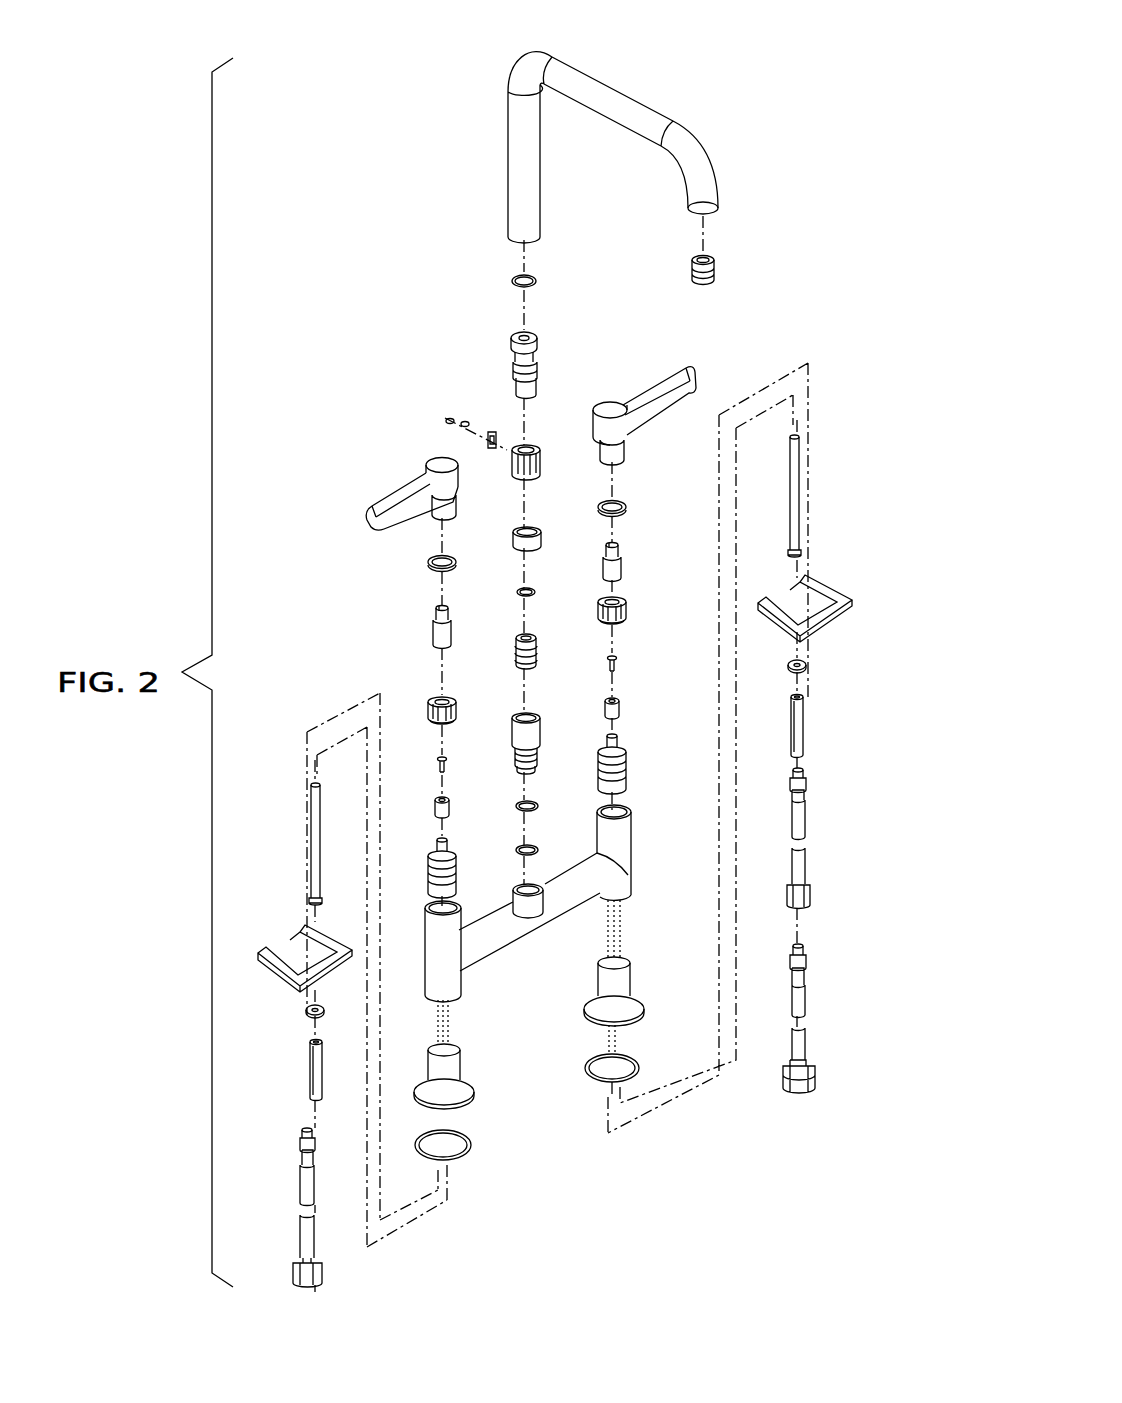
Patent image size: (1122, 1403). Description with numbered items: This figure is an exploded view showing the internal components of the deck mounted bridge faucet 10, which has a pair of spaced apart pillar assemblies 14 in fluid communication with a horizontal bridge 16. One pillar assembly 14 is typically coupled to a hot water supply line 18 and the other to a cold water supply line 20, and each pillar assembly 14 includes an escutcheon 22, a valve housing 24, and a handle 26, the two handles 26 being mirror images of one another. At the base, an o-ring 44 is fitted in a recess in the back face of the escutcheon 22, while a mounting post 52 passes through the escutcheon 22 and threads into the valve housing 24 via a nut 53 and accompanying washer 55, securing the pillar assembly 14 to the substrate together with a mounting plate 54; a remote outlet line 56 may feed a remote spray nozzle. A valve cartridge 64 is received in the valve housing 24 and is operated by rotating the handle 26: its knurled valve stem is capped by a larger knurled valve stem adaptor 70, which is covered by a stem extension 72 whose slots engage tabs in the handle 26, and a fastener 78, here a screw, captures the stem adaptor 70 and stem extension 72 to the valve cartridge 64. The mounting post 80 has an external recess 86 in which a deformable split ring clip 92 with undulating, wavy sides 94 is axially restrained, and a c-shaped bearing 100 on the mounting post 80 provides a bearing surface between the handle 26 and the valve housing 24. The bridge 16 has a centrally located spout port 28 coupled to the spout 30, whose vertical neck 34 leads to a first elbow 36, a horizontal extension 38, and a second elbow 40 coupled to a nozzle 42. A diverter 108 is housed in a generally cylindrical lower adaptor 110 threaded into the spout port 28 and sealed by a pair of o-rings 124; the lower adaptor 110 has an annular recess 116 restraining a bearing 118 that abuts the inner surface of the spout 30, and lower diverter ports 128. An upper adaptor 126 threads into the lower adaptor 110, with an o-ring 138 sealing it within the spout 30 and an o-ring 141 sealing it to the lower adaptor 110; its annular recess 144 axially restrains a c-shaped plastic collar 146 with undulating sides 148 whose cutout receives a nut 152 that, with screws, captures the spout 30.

The deck mounted bridge faucet 10 is at (361, 220).
The pillar assembly 14 is at (466, 1194).
The horizontal bridge 16 is at (534, 905).
The hot water supply line 18 is at (299, 1180).
The cold water supply line 20 is at (821, 820).
The escutcheon 22 is at (469, 1069).
The valve housing 24 is at (420, 944).
The handle 26 is at (517, 449).
The spout port 28 is at (518, 880).
The spout 30 is at (598, 133).
The vertical neck 34 is at (541, 145).
The first elbow 36 is at (510, 72).
The horizontal extension 38 is at (630, 88).
The second elbow 40 is at (707, 150).
The nozzle 42 is at (716, 262).
The o-ring 44 is at (462, 1136).
The mounting post 52 is at (321, 797).
The nut 53 is at (323, 1080).
The mounting plate 54 is at (270, 972).
The washer 55 is at (322, 1007).
The remote outlet line 56 is at (810, 996).
The valve cartridge 64 is at (427, 871).
The valve stem adaptor 70 is at (435, 806).
The stem extension 72 is at (429, 632).
The fastener 78 is at (437, 762).
The mounting post 80 is at (430, 523).
The external recess 86 is at (449, 500).
The split ring clip 92 is at (533, 661).
The wavy sides 94 is at (436, 721).
The c-shaped bearing 100 is at (430, 566).
The diverter 108 is at (542, 646).
The lower adaptor 110 is at (534, 726).
The annular recess 116 is at (543, 731).
The bearing 118 is at (538, 530).
The o-rings 124 is at (545, 805).
The upper adaptor 126 is at (556, 342).
The lower diverter ports 128 is at (519, 759).
The o-ring 138 is at (538, 280).
The o-ring 141 is at (537, 590).
The annular recess 144 is at (538, 358).
The collar 146 is at (528, 447).
The undulating sides 148 is at (520, 478).
The nut 152 is at (496, 427).